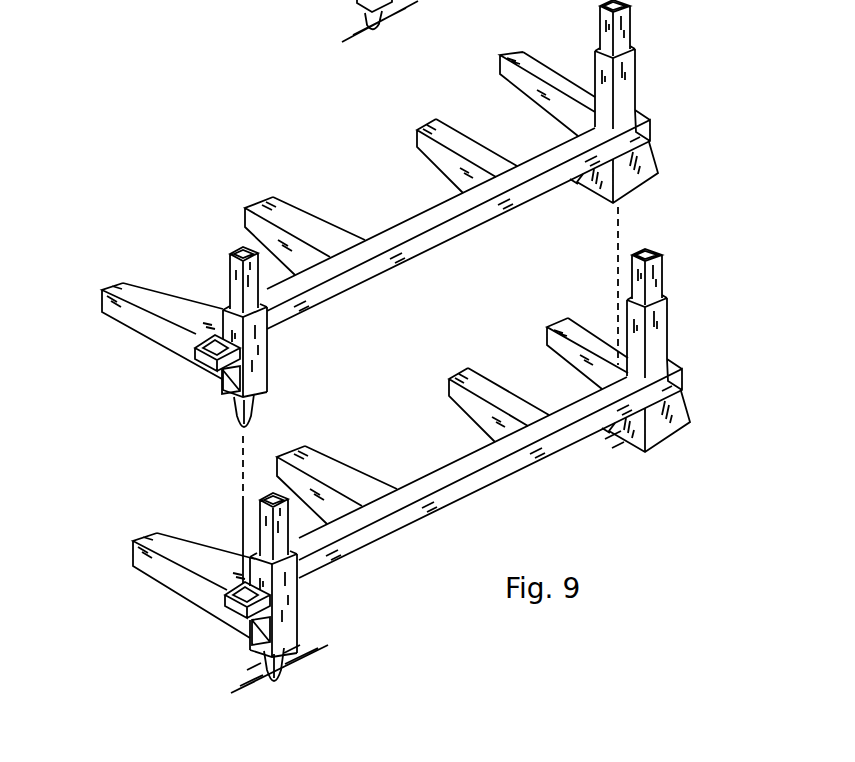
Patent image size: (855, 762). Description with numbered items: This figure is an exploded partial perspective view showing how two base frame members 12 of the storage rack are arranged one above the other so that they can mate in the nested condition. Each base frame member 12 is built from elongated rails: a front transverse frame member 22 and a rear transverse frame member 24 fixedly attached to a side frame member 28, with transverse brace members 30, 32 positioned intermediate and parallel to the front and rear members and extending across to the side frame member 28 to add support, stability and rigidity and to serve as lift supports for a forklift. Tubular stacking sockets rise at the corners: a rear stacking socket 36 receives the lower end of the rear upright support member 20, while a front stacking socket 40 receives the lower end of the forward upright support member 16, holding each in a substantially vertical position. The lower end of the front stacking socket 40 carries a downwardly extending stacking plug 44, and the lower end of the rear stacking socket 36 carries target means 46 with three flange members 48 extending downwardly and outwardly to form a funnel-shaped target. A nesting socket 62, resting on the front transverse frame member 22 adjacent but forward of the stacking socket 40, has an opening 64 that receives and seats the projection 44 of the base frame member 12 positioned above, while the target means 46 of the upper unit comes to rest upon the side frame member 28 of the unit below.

The base frame member 12 is at (413, 346).
The upright support member 16 is at (234, 285).
The upright support member 20 is at (624, 35).
The front transverse frame member 22 is at (147, 327).
The rear transverse frame member 24 is at (545, 77).
The side frame member 28 is at (438, 238).
The transverse brace member 30 is at (303, 226).
The transverse brace member 32 is at (462, 143).
The stacking socket 36 is at (626, 100).
The stacking socket 40 is at (256, 357).
The stacking plug 44 is at (231, 412).
The target means 46 is at (640, 189).
The flange member 48 is at (643, 173).
The nesting socket 62 is at (203, 357).
The opening 64 is at (209, 335).